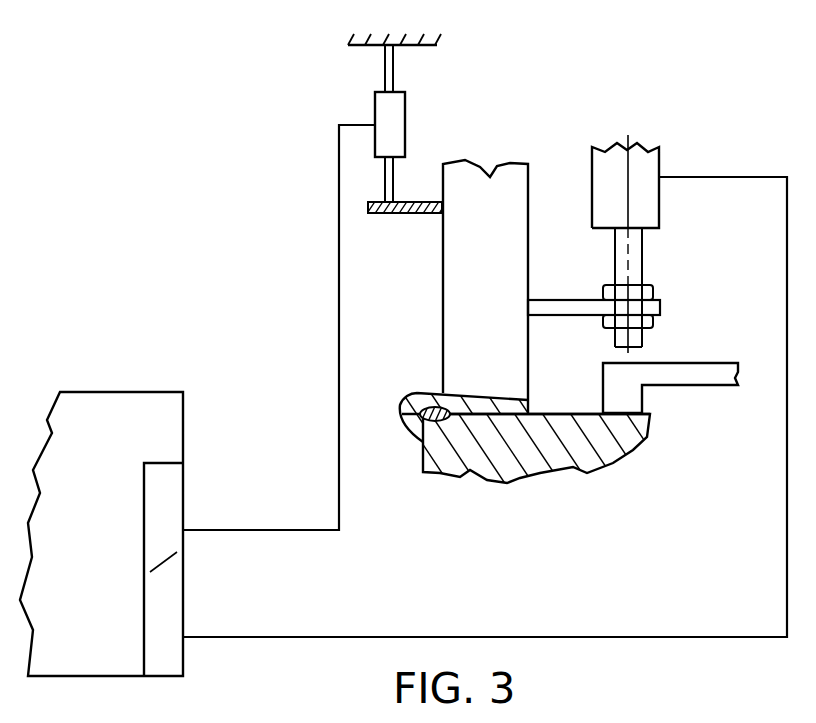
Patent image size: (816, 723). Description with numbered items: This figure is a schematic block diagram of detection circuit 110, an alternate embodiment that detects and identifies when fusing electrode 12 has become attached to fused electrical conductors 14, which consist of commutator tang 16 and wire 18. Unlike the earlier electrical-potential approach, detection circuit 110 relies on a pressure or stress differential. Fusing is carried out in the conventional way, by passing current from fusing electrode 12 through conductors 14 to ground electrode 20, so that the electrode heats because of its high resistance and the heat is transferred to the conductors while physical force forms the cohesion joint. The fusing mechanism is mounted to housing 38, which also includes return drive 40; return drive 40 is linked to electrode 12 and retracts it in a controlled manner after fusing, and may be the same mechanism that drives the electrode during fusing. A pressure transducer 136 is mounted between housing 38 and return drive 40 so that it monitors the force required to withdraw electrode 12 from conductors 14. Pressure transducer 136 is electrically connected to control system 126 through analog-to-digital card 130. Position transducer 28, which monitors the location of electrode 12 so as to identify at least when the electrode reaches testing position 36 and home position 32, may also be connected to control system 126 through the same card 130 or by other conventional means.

The fusing electrode 12 is at (468, 287).
The fused electrical conductors 14 is at (489, 520).
The commutator tang 16 is at (425, 397).
The wire 18 is at (425, 422).
The ground electrode 20 is at (693, 377).
The position transducer 28 is at (633, 257).
The home position 32 is at (514, 123).
The testing position 36 is at (592, 358).
The housing 38 is at (440, 39).
The return drive 40 is at (368, 207).
The detection circuit 110 is at (222, 234).
The control system 126 is at (95, 368).
The analog-to-digital card 130 is at (170, 663).
The pressure transducer 136 is at (402, 107).